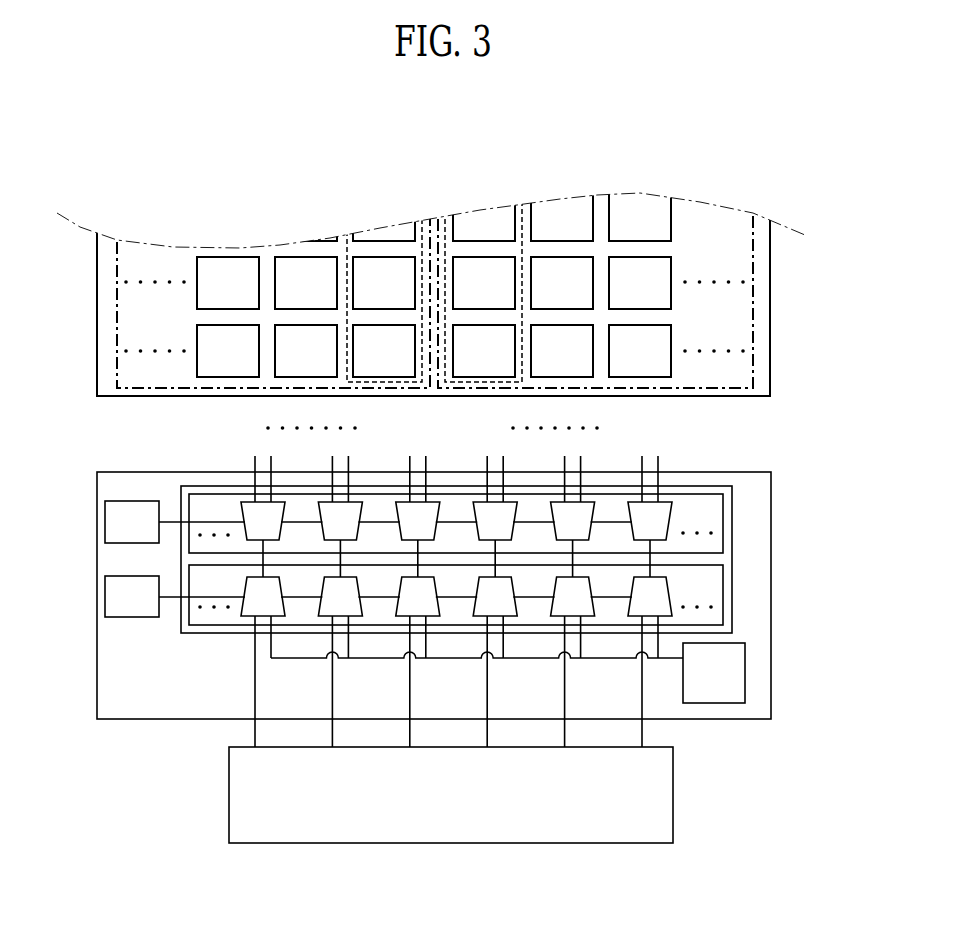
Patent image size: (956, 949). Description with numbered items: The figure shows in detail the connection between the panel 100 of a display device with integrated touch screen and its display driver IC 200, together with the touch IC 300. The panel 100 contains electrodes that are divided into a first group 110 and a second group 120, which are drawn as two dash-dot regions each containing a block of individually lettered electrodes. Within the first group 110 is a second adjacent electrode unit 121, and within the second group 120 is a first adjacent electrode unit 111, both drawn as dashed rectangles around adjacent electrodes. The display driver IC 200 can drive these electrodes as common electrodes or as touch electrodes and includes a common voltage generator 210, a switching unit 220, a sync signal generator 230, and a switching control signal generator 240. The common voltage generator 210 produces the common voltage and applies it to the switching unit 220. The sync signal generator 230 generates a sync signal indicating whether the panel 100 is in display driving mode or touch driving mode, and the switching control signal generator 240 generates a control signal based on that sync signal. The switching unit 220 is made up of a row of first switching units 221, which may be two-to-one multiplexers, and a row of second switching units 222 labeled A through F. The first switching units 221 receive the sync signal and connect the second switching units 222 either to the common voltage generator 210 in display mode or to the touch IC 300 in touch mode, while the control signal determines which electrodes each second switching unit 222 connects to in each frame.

The panel 100 is at (770, 350).
The first group 110 is at (117, 304).
The second group 120 is at (753, 305).
The second adjacent electrode unit 121 is at (392, 386).
The first adjacent electrode unit 111 is at (443, 386).
The display driver IC 200 is at (771, 648).
The common voltage generator 210 is at (729, 684).
The switching unit 220 is at (733, 502).
The first switching units 221 is at (723, 590).
The second switching units 222 is at (723, 520).
The sync signal generator 230 is at (147, 608).
The switching control signal generator 240 is at (147, 533).
The touch IC 300 is at (468, 805).